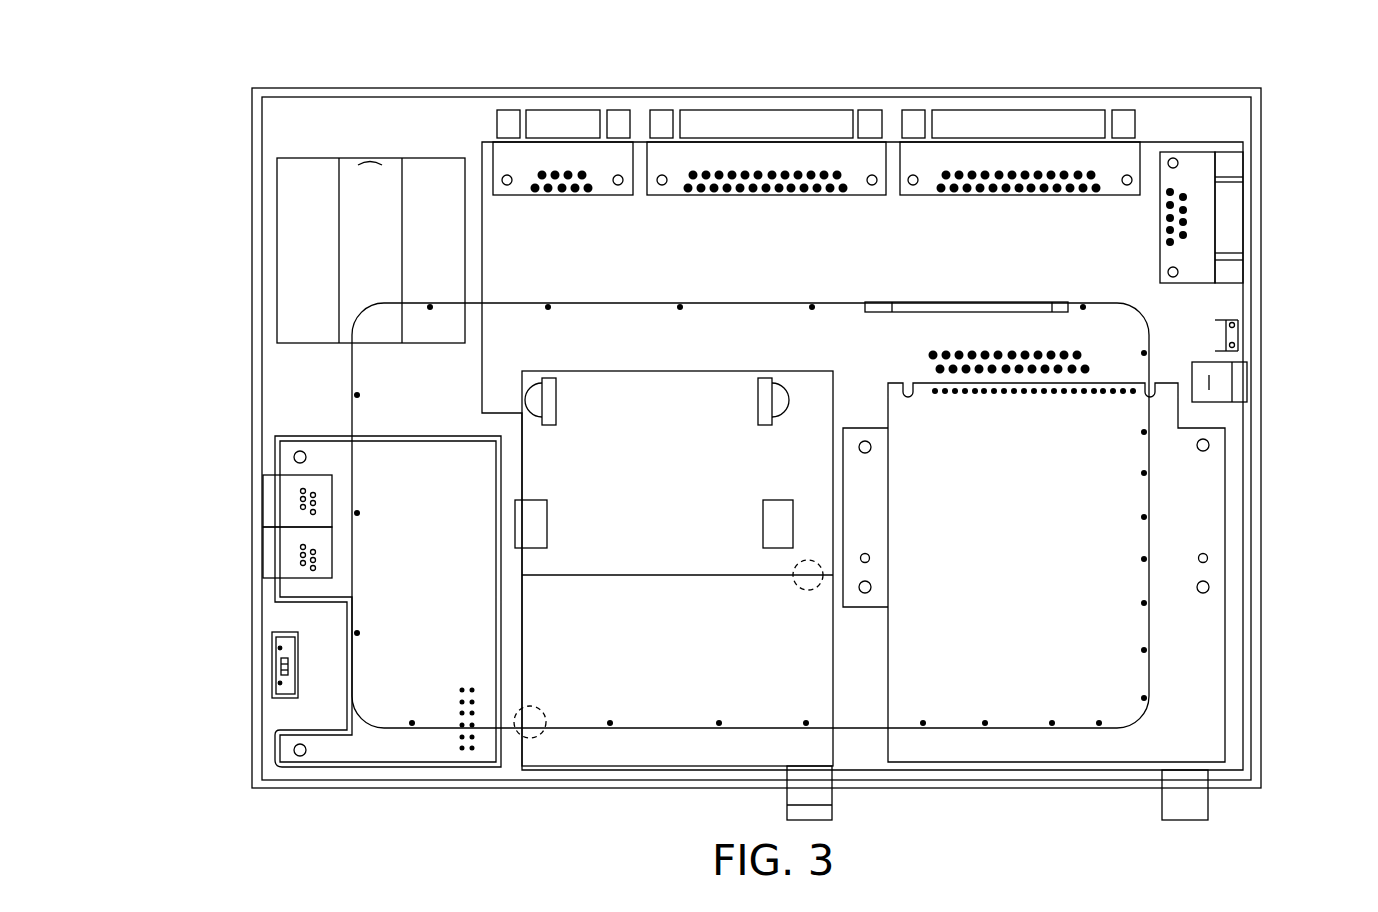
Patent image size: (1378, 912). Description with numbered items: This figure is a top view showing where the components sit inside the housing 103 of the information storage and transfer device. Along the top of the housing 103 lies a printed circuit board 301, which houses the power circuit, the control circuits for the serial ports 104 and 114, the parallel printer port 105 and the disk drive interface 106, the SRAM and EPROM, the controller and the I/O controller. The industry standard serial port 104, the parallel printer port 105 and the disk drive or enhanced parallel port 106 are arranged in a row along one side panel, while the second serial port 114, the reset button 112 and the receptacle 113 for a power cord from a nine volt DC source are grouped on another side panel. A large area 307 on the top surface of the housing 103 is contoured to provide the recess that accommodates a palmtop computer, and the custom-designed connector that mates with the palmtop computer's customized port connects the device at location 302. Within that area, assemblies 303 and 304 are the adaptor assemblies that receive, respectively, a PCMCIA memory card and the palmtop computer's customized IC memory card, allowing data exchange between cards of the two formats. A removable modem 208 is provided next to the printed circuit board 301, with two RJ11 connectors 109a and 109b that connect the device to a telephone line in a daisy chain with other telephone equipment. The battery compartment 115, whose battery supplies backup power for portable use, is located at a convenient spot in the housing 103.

The housing 103 is at (1263, 168).
The serial port 104 is at (551, 133).
The parallel printer port 105 is at (693, 135).
The disk drive port 106 is at (963, 132).
The RJ11 connector 109a is at (261, 502).
The RJ11 connector 109b is at (261, 548).
The reset button 112 is at (1218, 382).
The receptacle for a power cord 113 is at (1234, 333).
The second serial port 114 is at (1186, 176).
The battery compartment 115 is at (400, 158).
The removable modem 208 is at (492, 597).
The printed circuit board 301 is at (484, 213).
The port 302 is at (950, 298).
The adaptor assembly 303 is at (830, 425).
The adaptor assembly 304 is at (889, 433).
The area 307 is at (1150, 321).